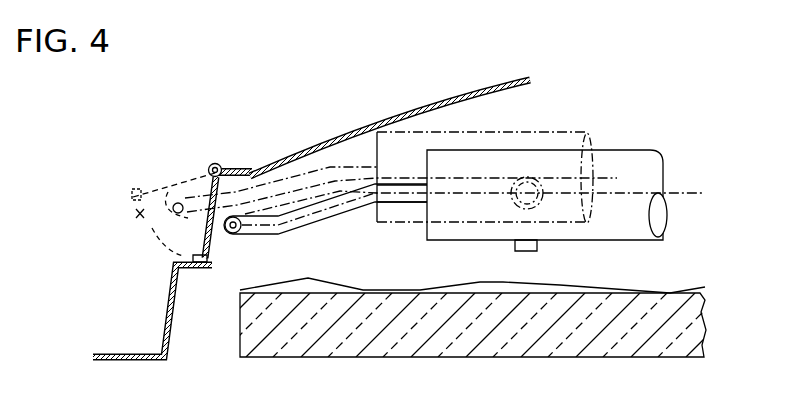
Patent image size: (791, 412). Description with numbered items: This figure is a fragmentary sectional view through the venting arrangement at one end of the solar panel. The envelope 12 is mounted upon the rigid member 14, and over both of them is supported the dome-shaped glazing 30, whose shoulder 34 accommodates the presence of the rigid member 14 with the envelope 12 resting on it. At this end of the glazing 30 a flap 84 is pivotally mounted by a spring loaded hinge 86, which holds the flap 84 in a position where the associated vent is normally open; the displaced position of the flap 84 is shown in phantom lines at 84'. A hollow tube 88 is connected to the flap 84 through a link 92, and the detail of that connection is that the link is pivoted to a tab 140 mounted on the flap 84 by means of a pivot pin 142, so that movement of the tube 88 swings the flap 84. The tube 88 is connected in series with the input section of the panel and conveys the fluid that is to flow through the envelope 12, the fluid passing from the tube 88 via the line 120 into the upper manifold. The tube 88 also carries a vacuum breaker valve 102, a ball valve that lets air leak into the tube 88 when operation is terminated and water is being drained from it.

The envelope 12 is at (333, 283).
The rigid member 14 is at (528, 345).
The glazing 30 is at (392, 115).
The shoulder 34 is at (167, 318).
The flap 84 is at (173, 189).
The displaced position of flap 84' is at (119, 216).
The spring loaded hinge 86 is at (217, 163).
The hollow tube 88 is at (525, 158).
The link 92 is at (333, 205).
The vacuum breaker valve 102 is at (535, 244).
The line 120 is at (533, 180).
The tab 140 is at (229, 238).
The pivot pin 142 is at (239, 238).